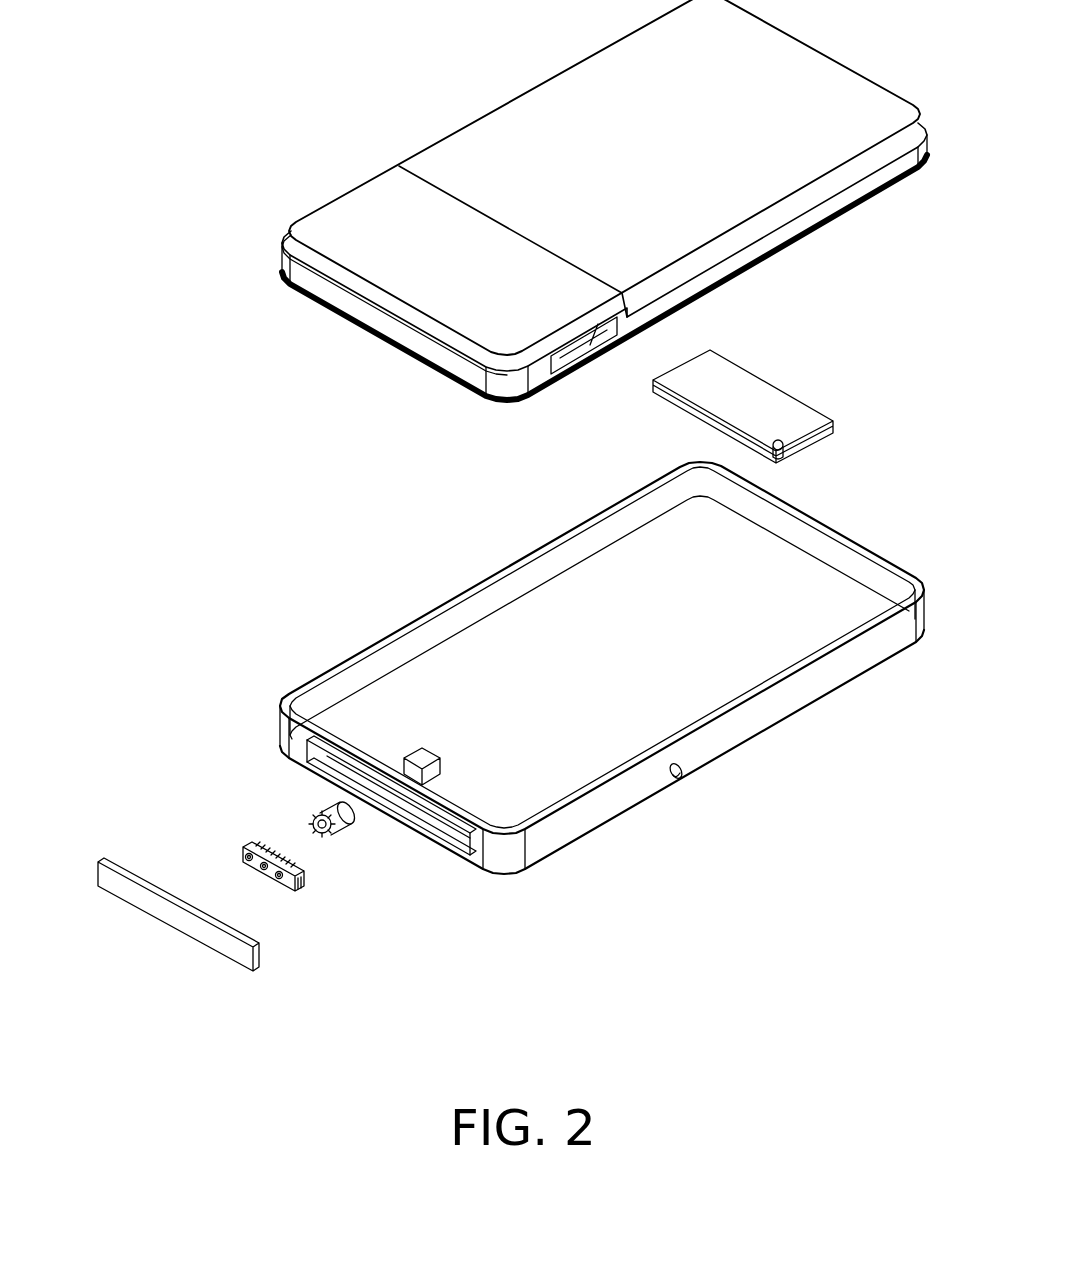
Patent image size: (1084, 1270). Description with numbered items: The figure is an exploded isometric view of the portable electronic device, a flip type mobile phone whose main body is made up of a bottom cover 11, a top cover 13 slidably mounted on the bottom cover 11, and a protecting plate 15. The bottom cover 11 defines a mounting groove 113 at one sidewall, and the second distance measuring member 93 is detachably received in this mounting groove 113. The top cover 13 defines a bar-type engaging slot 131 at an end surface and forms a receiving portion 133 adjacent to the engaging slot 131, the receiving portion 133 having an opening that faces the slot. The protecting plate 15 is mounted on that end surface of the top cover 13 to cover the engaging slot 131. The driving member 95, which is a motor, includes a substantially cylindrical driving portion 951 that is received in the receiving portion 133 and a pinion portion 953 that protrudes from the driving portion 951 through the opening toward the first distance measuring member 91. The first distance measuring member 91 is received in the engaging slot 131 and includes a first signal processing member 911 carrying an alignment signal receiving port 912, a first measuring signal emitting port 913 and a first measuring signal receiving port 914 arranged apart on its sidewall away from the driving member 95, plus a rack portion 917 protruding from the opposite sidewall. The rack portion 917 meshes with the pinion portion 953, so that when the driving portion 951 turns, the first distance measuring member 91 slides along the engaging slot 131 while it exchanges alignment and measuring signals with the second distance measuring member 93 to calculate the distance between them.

The bottom cover 11 is at (604, 221).
The mounting groove 113 is at (570, 356).
The second distance measuring member 93 is at (745, 387).
The top cover 13 is at (602, 685).
The receiving portion 133 is at (422, 748).
The engaging slot 131 is at (447, 826).
The driving member 95 is at (280, 797).
The driving portion 951 is at (338, 800).
The pinion portion 953 is at (313, 822).
The first distance measuring member 91 is at (269, 880).
The first signal processing member 911 is at (250, 848).
The alignment signal receiving port 912 is at (278, 882).
The first measuring signal emitting port 913 is at (262, 872).
The first measuring signal receiving port 914 is at (243, 859).
The rack portion 917 is at (302, 874).
The protecting plate 15 is at (208, 940).